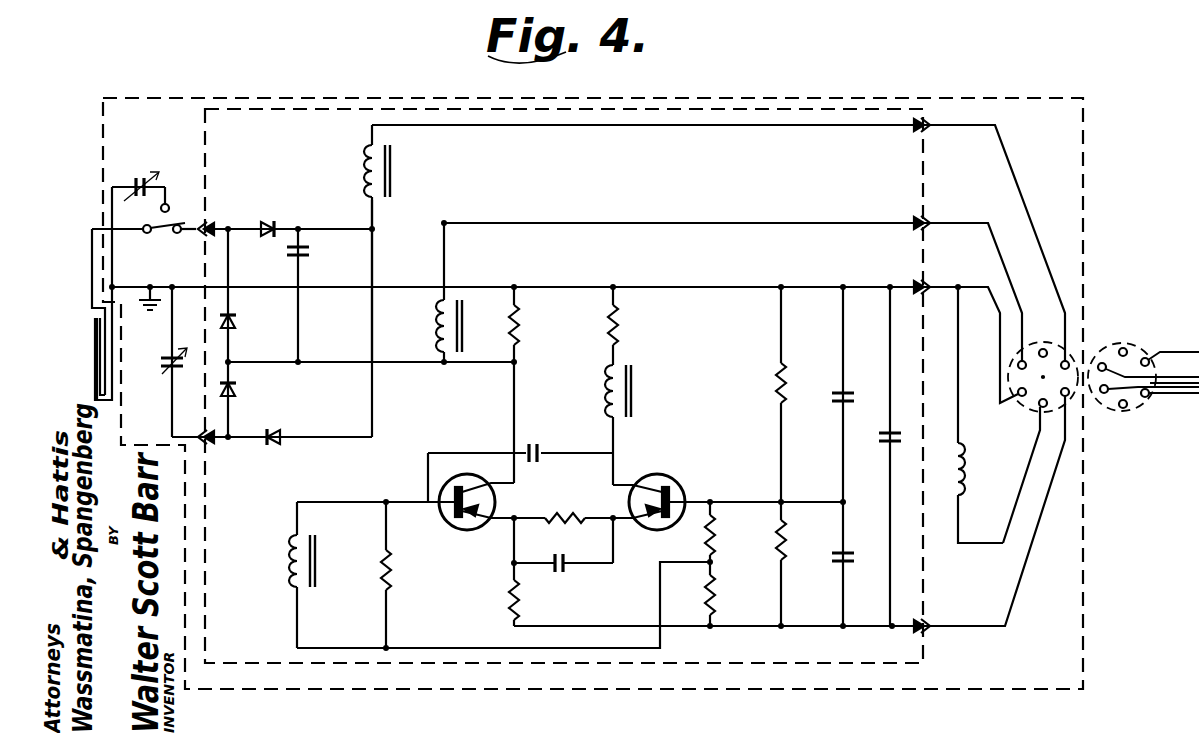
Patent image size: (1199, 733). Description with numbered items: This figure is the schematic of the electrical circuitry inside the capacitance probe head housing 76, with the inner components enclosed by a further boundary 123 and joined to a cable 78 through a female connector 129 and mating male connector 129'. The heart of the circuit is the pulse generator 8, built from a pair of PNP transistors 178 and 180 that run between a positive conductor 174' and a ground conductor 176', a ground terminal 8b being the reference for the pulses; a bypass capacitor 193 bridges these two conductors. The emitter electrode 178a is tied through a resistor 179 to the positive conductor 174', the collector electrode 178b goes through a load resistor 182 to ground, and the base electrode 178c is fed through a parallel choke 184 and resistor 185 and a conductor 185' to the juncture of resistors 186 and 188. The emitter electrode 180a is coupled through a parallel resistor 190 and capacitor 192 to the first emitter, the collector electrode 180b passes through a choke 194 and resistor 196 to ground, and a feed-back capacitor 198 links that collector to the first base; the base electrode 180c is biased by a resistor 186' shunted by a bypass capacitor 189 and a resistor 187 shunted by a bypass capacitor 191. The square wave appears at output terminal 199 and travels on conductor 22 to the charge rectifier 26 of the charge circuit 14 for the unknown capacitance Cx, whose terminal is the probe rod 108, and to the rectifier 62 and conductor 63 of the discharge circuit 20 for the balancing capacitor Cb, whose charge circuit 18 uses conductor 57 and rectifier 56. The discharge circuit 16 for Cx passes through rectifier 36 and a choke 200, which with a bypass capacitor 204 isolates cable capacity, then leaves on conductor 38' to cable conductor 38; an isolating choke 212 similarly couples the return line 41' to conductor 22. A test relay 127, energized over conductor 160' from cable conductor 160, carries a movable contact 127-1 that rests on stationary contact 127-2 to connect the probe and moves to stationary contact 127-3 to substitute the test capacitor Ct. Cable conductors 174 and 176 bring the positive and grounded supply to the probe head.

The capacitance probe head housing 76 is at (615, 90).
The inner enclosure 123 is at (727, 103).
The ground conductor 176' is at (565, 330).
The return line 41' is at (716, 203).
The conductor 38' is at (683, 141).
The positive conductor 174' is at (789, 511).
The test capacitor Ct is at (134, 224).
The stationary contact 127-3 is at (170, 202).
The stationary contact 127-2 is at (144, 227).
The movable contact 127-1 is at (179, 226).
The capacitor charge circuit 14 is at (187, 243).
The unknown capacitance Cx is at (83, 314).
The rod 108 is at (96, 396).
The balancing capacitor Cb is at (155, 362).
The capacitor discharge circuit 20 is at (202, 399).
The capacitor charge circuit 18 is at (328, 431).
The charge rectifier 26 is at (238, 326).
The rectifier 62 is at (238, 394).
The rectifier 56 is at (274, 440).
The rectifier 36 is at (263, 215).
The bypass capacitor 204 is at (306, 252).
The conductor 57 is at (370, 331).
The conductor 22 is at (400, 364).
The output terminal 199 is at (512, 364).
The choke 200 is at (364, 176).
The discharge circuit 16 is at (528, 164).
The isolating choke 212 is at (436, 320).
The load resistor 182 is at (519, 328).
The ground terminal 8b is at (515, 287).
The resistor 196 is at (620, 324).
The choke 194 is at (636, 401).
The pulse generator 8 is at (591, 426).
The feed-back capacitor 198 is at (540, 446).
The PNP transistor 178 is at (446, 495).
The collector electrode 178b is at (496, 472).
The base electrode 178c is at (476, 523).
The emitter electrode 178a is at (492, 522).
The resistor 185 is at (503, 575).
The choke 184 is at (293, 561).
The conductor 185' is at (444, 628).
The resistor 190 is at (563, 501).
The capacitor 192 is at (578, 570).
The resistor 179 is at (508, 596).
The PNP transistor 180 is at (684, 480).
The collector electrode 180b is at (651, 484).
The base electrode 180c is at (680, 496).
The emitter electrode 180a is at (661, 522).
The resistor 186 is at (734, 538).
The resistor 188 is at (713, 587).
The resistor 187 is at (748, 570).
The resistor 186' is at (738, 402).
The bypass capacitor 191 is at (790, 530).
The bypass capacitor 189 is at (834, 392).
The bypass capacitor 193 is at (878, 436).
The test relay 127 is at (964, 492).
The conductor 160' is at (1011, 475).
The female connector 129 is at (1071, 350).
The male connector 129' is at (1143, 365).
The cable conductor 38 is at (1142, 313).
The cable 78 is at (1164, 345).
The cable conductor 176 is at (1179, 361).
The cable conductor 160 is at (1153, 423).
The cable conductor 174 is at (1167, 434).
The conductor 63 is at (1180, 395).